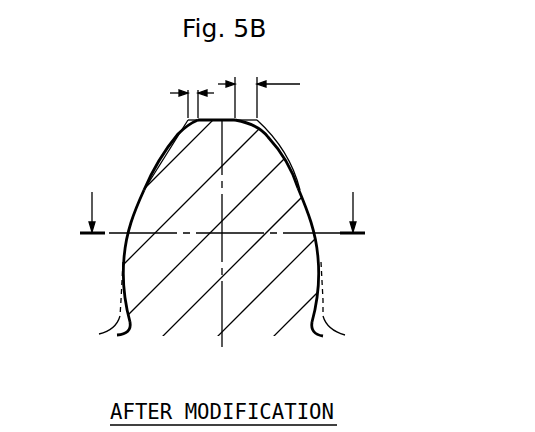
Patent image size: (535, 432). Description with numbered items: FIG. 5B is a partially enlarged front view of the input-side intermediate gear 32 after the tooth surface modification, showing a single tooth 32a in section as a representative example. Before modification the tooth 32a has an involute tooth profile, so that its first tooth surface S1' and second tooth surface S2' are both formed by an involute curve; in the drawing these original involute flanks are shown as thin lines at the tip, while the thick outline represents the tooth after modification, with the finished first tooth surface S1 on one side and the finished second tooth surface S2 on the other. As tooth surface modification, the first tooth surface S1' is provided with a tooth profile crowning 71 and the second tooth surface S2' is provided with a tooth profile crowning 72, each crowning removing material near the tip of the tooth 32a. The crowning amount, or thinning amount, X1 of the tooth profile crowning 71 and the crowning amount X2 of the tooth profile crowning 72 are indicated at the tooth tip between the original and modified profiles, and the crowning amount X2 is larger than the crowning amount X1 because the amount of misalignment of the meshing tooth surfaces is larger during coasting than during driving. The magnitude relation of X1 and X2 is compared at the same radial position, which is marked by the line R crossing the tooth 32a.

The input-side intermediate gear 32 is at (267, 216).
The tooth 32a is at (177, 293).
The tooth profile crowning 71 is at (176, 131).
The tooth profile crowning 72 is at (267, 134).
The first tooth surface S1 is at (102, 256).
The second tooth surface S2 is at (341, 255).
The first tooth surface S1' is at (163, 155).
The second tooth surface S2' is at (295, 154).
The crowning amount X1 is at (182, 96).
The crowning amount X2 is at (259, 91).
The reference radius line R is at (222, 212).